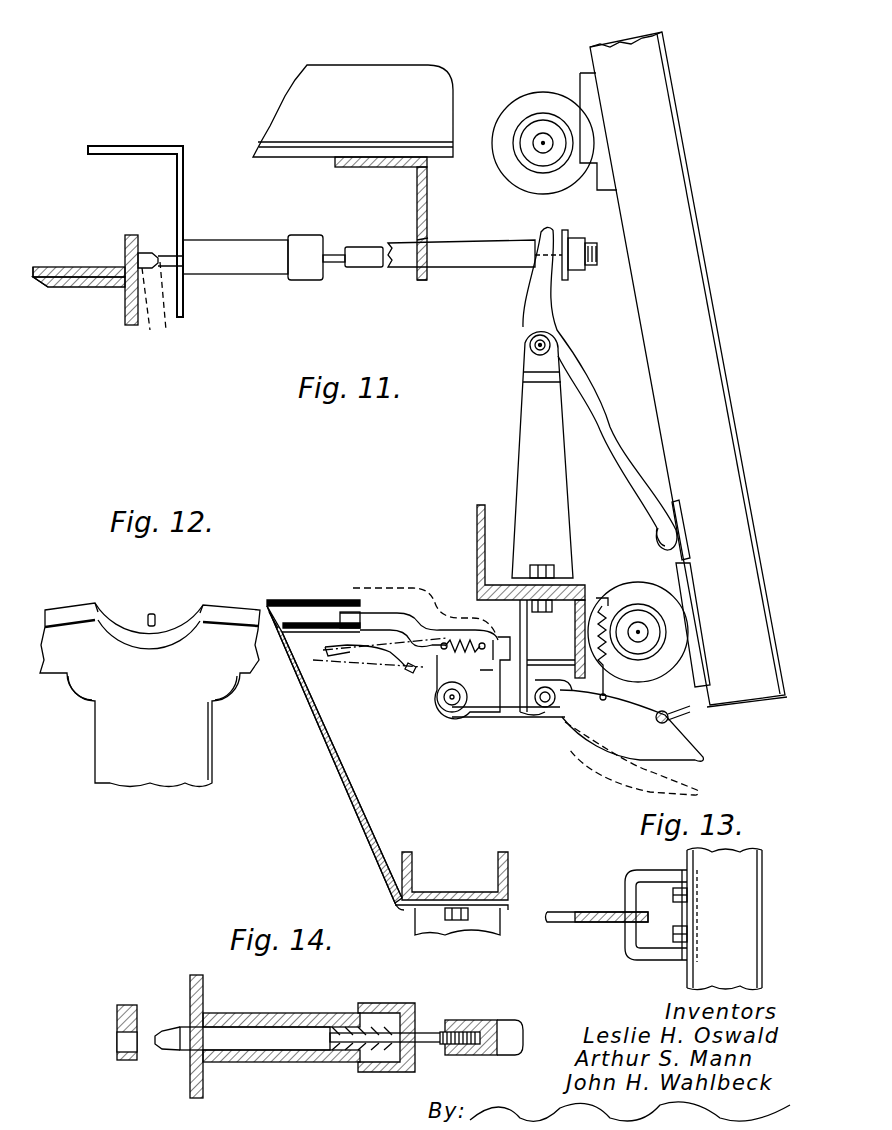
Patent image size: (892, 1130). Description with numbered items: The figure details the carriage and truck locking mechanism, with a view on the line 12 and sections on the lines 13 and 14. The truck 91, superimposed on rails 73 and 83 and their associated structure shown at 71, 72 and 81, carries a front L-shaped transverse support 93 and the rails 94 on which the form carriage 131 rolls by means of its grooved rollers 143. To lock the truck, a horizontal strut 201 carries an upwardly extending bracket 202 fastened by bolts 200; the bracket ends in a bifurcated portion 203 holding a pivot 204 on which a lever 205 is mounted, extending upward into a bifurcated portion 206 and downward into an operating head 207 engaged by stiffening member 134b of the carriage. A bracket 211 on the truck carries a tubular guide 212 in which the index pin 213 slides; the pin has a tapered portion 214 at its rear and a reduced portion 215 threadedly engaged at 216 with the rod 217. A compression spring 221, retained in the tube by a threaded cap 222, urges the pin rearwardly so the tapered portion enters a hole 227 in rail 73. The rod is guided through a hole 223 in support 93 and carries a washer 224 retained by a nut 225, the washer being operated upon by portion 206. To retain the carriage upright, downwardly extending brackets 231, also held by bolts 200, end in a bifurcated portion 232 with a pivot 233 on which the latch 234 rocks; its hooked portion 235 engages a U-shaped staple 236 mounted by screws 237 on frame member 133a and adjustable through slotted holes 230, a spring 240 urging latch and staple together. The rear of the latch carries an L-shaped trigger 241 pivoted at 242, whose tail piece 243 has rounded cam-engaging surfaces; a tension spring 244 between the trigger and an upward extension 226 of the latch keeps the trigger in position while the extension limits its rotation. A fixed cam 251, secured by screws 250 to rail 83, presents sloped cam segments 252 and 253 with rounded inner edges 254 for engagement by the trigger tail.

In FIG. 11, the rails 94 is at (357, 70).
In FIG. 11, the rollers 143 is at (522, 100).
In FIG. 11, the form carriage 131 is at (692, 188).
In FIG. 11, the bracket 211 is at (185, 190).
In FIG. 14, the bracket 211 is at (205, 992).
In FIG. 11, the front L-shaped transverse support 93 is at (429, 206).
In FIG. 11, the plate 72 is at (50, 265).
In FIG. 11, the section line 14— 14 is at (120, 258).
In FIG. 11, the hole 223 is at (428, 240).
In FIG. 11, the washer 224 is at (565, 236).
In FIG. 11, the tubular guide 212 is at (233, 274).
In FIG. 14, the tubular guide 212 is at (291, 1018).
In FIG. 11, the threaded cap 222 is at (300, 281).
In FIG. 14, the threaded cap 222 is at (388, 1008).
In FIG. 11, the reduced portion 215 is at (333, 263).
In FIG. 14, the reduced portion 215 is at (438, 1046).
In FIG. 11, the rod 217 is at (445, 268).
In FIG. 14, the rod 217 is at (492, 1022).
In FIG. 11, the bifurcated portion 206 is at (548, 270).
In FIG. 11, the nut 225 is at (578, 270).
In FIG. 11, the truck 91 is at (400, 282).
In FIG. 11, the plate 71 is at (70, 292).
In FIG. 11, the rail 73 is at (90, 290).
In FIG. 11, the index pin 213 is at (162, 268).
In FIG. 14, the index pin 213 is at (257, 1052).
In FIG. 11, the pivot 204 is at (530, 345).
In FIG. 11, the lever 205 is at (548, 312).
In FIG. 11, the bifurcated portion 203 is at (525, 363).
In FIG. 11, the bracket 202 is at (527, 423).
In FIG. 11, the horizontal strut 201 is at (476, 512).
In FIG. 11, the bolts 200 is at (547, 568).
In FIG. 11, the operating head 207 is at (660, 540).
In FIG. 11, the transverse stiffening member 134b is at (682, 522).
In FIG. 11, the spring 240 is at (606, 610).
In FIG. 11, the tail piece 243 is at (342, 614).
In FIG. 12, the tail piece 243 is at (150, 612).
In FIG. 11, the section line 12— 12 is at (364, 560).
In FIG. 11, the cam segment 252 is at (280, 602).
In FIG. 12, the cam segment 252 is at (65, 623).
In FIG. 11, the tension spring 244 is at (447, 640).
In FIG. 11, the bracket 231 is at (522, 630).
In FIG. 11, the trigger 241 is at (406, 669).
In FIG. 11, the pivot 242 is at (442, 702).
In FIG. 11, the upward extension 226 is at (481, 680).
In FIG. 11, the pivot 233 is at (535, 712).
In FIG. 11, the bifurcated portion 232 is at (545, 710).
In FIG. 11, the section line 13— 13 is at (773, 702).
In FIG. 11, the latch 234 is at (640, 762).
In FIG. 13, the latch 234 is at (600, 926).
In FIG. 11, the U-shaped staple 236 is at (662, 711).
In FIG. 13, the U-shaped staple 236 is at (652, 962).
In FIG. 11, the hooked portion 235 is at (672, 718).
In FIG. 11, the fixed cam 251 is at (345, 790).
In FIG. 12, the fixed cam 251 is at (142, 786).
In FIG. 11, the rail 83 is at (511, 862).
In FIG. 11, the bracket 81 is at (496, 933).
In FIG. 11, the screws 250 is at (456, 921).
In FIG. 12, the cam segment 253 is at (227, 620).
In FIG. 12, the rounded inner edges 254 is at (96, 605).
In FIG. 13, the end member 133a is at (745, 930).
In FIG. 13, the slotted holes 230 is at (688, 895).
In FIG. 13, the screws 237 is at (688, 934).
In FIG. 14, the hole 227 is at (116, 1035).
In FIG. 14, the tapered portion 214 is at (168, 1050).
In FIG. 14, the compression spring 221 is at (345, 1063).
In FIG. 14, the threaded engagement 216 is at (465, 1025).